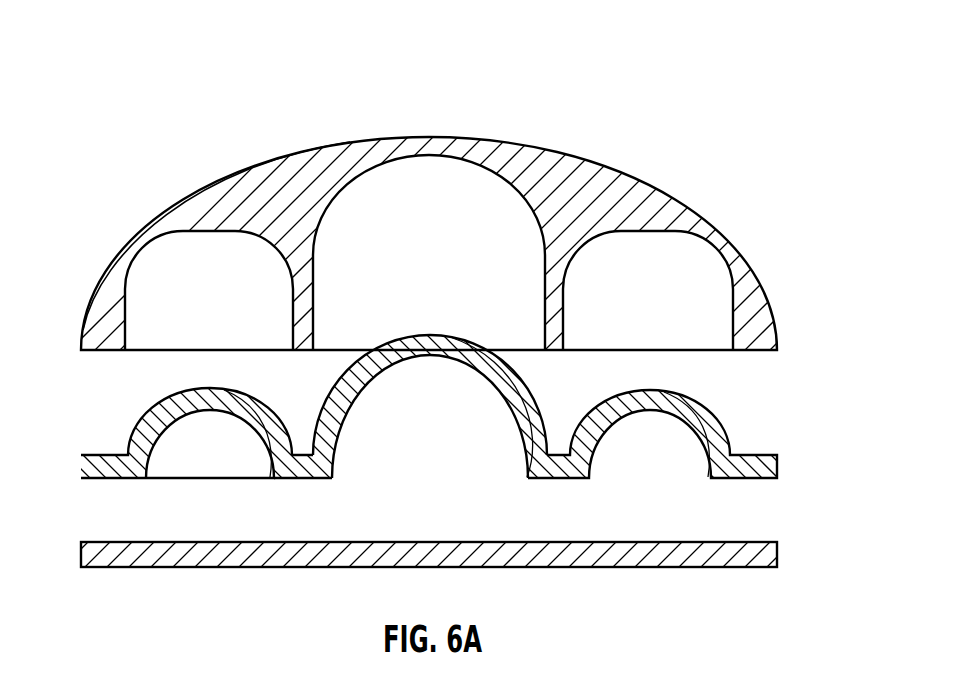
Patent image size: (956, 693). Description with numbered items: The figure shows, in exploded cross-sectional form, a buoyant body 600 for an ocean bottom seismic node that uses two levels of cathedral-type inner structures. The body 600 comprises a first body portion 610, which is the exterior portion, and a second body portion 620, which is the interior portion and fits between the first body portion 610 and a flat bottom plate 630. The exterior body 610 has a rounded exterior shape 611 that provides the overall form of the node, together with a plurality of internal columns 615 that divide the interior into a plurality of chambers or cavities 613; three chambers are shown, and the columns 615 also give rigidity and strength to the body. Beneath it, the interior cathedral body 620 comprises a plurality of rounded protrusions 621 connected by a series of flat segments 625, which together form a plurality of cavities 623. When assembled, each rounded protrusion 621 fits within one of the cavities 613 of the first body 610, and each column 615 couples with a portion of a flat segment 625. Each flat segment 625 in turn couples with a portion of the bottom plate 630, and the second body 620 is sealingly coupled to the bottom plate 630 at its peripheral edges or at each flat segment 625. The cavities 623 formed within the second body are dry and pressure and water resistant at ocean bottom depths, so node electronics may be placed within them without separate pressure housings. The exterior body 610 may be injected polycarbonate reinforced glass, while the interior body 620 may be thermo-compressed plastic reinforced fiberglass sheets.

The body 600 is at (144, 147).
The first body portion 610 is at (508, 218).
The rounded exterior shape 611 is at (570, 182).
The chambers/cavities 613 is at (420, 178).
The internal columns/protrusions 615 is at (315, 300).
The second body portion 620 is at (478, 405).
The rounded protrusions 621 is at (337, 403).
The chambers/cavities 623 is at (443, 385).
The flat segments 625 is at (306, 478).
The bottom plate 630 is at (777, 555).